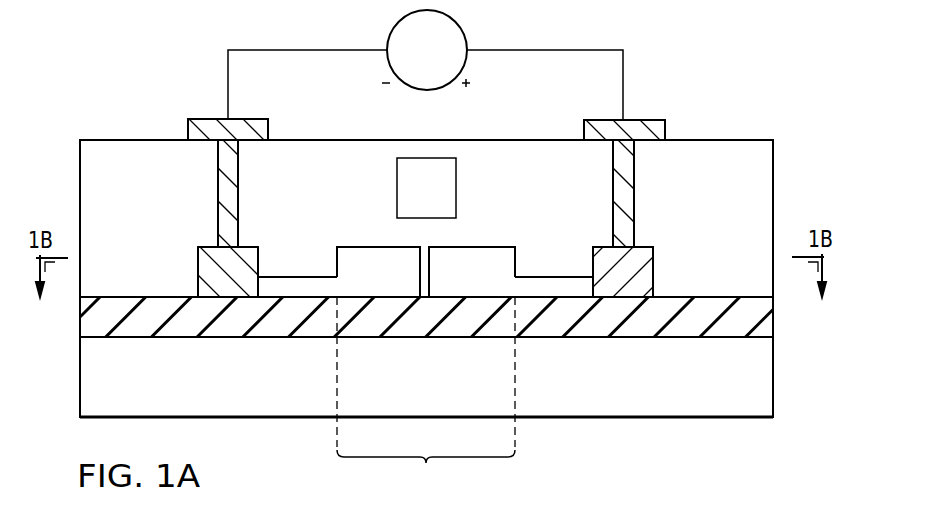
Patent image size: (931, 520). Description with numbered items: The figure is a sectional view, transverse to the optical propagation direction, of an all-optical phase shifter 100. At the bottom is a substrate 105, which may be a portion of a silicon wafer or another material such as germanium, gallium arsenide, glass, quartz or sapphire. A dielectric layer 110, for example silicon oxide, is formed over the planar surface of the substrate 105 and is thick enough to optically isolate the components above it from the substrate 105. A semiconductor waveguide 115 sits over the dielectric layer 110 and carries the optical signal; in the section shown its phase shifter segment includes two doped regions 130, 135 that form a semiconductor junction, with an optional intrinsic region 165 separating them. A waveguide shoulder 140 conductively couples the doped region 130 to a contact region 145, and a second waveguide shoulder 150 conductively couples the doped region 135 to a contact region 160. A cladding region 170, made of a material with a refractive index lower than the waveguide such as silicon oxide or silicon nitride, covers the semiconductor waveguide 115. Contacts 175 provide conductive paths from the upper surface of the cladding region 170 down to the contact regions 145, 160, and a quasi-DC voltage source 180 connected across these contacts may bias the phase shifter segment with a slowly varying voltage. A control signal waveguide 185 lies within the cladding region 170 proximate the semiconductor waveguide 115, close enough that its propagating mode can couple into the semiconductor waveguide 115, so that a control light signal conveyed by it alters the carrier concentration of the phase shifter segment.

The all-optical phase shifter 100 is at (746, 46).
The substrate 105 is at (778, 384).
The dielectric layer 110 is at (778, 335).
The semiconductor waveguide 115 is at (426, 397).
The doped region 130 is at (487, 255).
The doped region 135 is at (365, 255).
The waveguide shoulder 140 is at (555, 283).
The contact region 145 is at (645, 263).
The waveguide shoulder 150 is at (295, 283).
The contact region 160 is at (198, 263).
The intrinsic region 165 is at (428, 300).
The cladding region 170 is at (98, 146).
The contacts 175 is at (193, 130).
The quasi-DC voltage source 180 is at (445, 203).
The control signal waveguide 185 is at (445, 65).